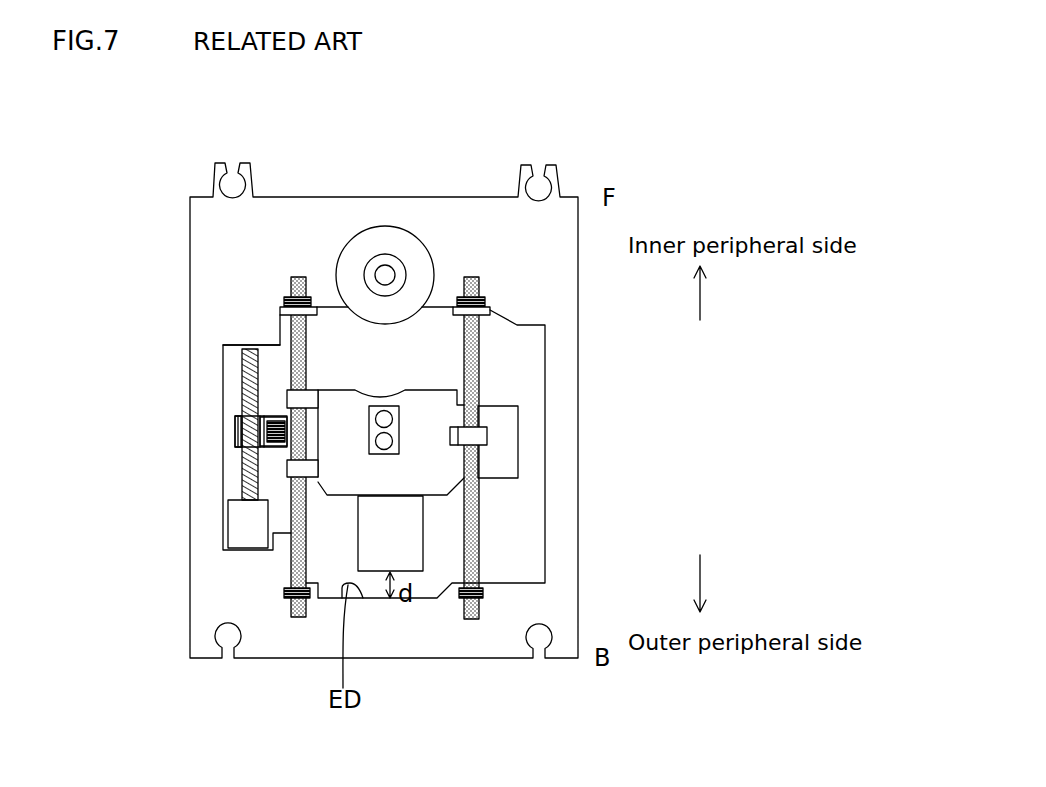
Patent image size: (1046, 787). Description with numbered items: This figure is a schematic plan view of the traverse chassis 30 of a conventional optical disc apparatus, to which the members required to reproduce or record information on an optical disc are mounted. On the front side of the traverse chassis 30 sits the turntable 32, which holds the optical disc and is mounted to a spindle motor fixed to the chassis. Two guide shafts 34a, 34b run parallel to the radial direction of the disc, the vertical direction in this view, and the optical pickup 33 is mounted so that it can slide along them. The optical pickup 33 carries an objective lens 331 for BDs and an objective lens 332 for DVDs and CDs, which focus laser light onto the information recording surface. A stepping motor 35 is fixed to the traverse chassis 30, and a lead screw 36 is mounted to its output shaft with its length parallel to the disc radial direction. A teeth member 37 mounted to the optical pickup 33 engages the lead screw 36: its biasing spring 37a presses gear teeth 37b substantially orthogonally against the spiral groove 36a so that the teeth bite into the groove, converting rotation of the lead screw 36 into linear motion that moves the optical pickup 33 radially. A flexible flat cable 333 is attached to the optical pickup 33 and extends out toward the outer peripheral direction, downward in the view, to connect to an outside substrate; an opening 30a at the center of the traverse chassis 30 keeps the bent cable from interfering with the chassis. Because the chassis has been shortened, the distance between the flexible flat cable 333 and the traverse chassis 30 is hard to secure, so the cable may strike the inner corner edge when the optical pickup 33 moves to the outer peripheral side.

The traverse chassis 30 is at (560, 135).
The opening 30a is at (535, 372).
The turntable 32 is at (412, 262).
The optical pickup 33 is at (420, 377).
The objective lens 331 is at (383, 402).
The objective lens 332 is at (386, 450).
The flexible flat cable 333 is at (366, 542).
The guide shaft 34a is at (298, 277).
The guide shaft 34b is at (477, 277).
The stepping motor 35 is at (232, 520).
The lead screw 36 is at (225, 345).
The spiral groove 36a is at (247, 373).
The teeth member 37 is at (270, 447).
The biasing spring 37a is at (270, 416).
The gear teeth 37b is at (238, 435).